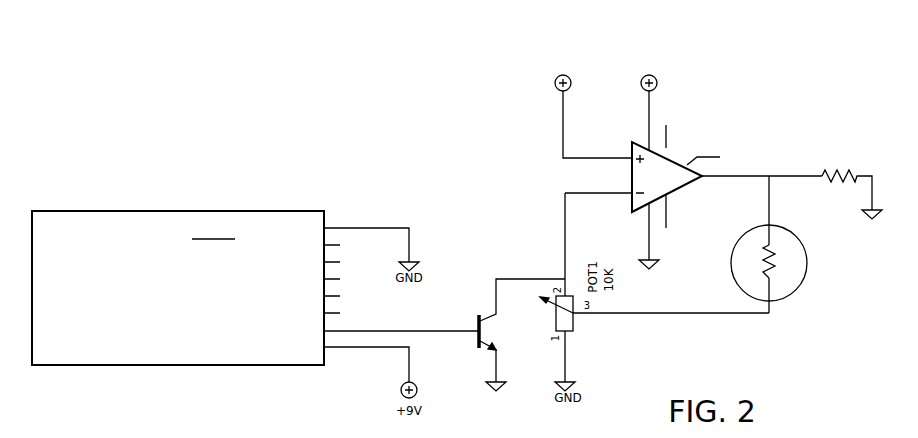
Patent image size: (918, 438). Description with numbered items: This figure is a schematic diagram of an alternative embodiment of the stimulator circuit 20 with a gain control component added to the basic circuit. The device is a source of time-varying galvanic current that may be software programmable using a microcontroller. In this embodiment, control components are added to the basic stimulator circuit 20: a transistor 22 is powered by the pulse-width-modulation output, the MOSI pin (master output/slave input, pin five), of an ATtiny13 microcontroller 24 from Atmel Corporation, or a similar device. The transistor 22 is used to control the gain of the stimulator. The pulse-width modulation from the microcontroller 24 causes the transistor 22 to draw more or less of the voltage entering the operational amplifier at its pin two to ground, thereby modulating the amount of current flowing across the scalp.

The stimulator circuit 20 is at (714, 93).
The transistor 22 is at (495, 318).
The microcontroller 24 is at (88, 222).